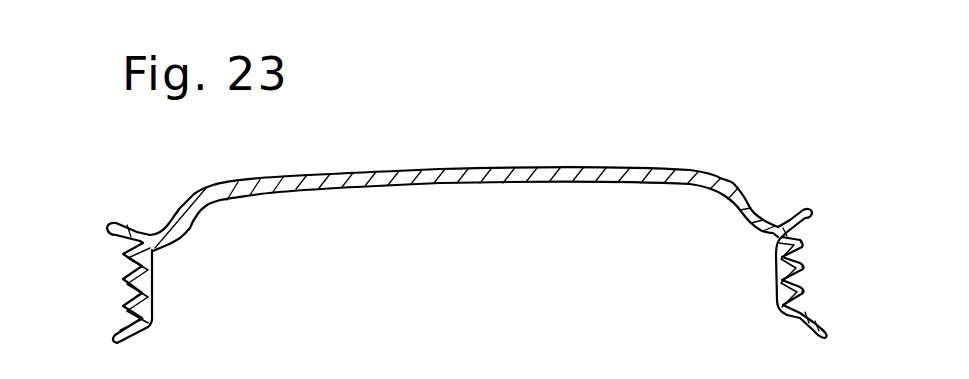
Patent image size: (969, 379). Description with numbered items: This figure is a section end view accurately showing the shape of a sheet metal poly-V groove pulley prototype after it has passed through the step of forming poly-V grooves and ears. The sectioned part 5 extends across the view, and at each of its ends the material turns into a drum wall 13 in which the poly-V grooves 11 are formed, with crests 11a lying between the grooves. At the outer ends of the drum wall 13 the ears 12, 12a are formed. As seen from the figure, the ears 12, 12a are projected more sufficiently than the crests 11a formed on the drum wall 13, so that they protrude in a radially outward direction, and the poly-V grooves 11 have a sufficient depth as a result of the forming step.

The plate 5 is at (445, 168).
The poly-V grooves 11 is at (113, 280).
The crests 11a is at (803, 241).
The ear 12 is at (807, 210).
The ear 12a is at (824, 333).
The drum wall 13 is at (777, 275).